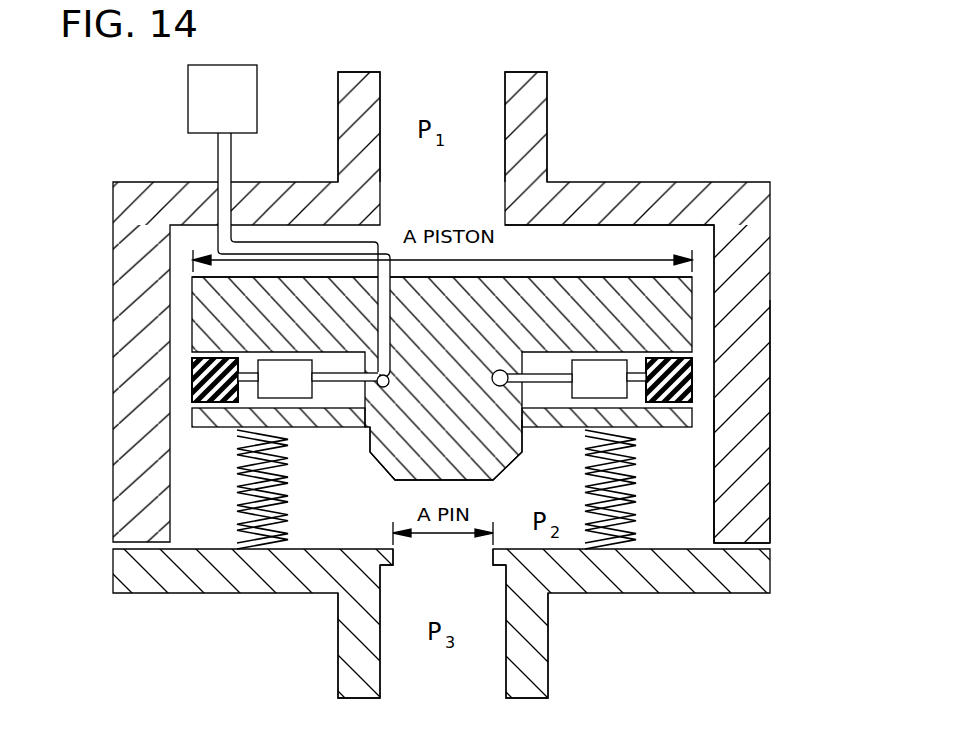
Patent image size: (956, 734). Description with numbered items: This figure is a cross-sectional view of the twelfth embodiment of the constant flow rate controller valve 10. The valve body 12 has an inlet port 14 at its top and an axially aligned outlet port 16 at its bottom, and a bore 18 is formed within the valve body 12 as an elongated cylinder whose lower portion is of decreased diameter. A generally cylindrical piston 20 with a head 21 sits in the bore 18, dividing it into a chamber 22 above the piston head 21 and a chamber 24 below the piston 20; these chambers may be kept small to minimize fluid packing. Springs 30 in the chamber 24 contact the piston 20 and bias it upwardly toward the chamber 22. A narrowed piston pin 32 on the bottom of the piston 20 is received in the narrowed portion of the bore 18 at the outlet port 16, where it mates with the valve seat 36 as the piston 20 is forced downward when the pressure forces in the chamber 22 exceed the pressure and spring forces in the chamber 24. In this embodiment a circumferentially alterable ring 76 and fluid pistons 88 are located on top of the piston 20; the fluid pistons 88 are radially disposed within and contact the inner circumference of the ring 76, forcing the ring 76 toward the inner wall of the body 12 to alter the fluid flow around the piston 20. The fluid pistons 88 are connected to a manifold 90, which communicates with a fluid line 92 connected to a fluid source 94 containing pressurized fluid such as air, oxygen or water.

The constant flow rate controller valve 10 is at (468, 382).
The valve body 12 is at (562, 182).
The inlet port 14 is at (480, 100).
The outlet port 16 is at (477, 677).
The bore 18 is at (700, 345).
The piston 20 is at (506, 318).
The head 21 is at (613, 277).
The chamber 22 is at (683, 235).
The chamber 24 is at (692, 513).
The springs 30 is at (240, 472).
The piston pin 32 is at (510, 462).
The valve seat 36 is at (493, 566).
The circumferentially alterable ring 76 is at (678, 377).
The fluid pistons 88 is at (290, 393).
The manifold 90 is at (382, 387).
The fluid line 92 is at (231, 307).
The fluid source 94 is at (188, 96).